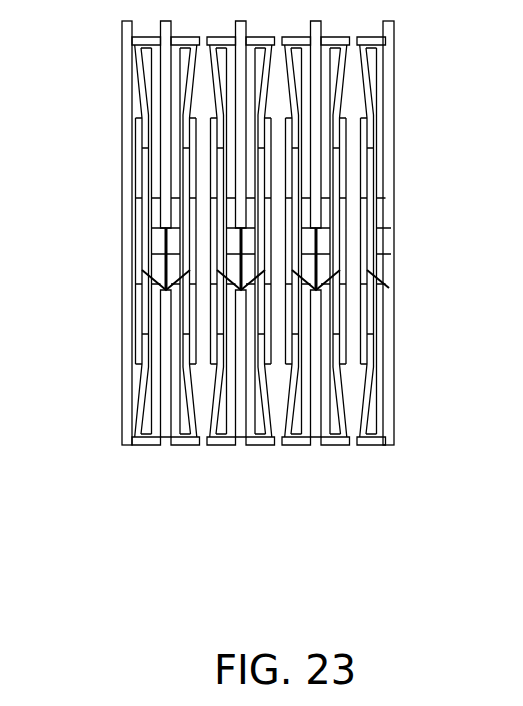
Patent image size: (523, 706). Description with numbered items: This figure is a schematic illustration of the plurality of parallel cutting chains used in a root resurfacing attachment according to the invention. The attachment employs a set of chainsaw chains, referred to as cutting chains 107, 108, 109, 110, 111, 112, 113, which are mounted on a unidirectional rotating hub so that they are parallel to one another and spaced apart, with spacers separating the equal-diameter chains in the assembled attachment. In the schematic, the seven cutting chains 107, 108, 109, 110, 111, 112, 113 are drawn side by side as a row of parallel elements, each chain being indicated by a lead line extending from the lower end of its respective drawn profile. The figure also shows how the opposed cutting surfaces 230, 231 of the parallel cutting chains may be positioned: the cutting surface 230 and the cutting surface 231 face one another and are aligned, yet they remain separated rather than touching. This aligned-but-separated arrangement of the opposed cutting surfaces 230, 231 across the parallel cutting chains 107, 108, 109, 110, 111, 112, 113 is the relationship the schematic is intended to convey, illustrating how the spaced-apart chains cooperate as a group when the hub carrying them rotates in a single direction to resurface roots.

The cutting chain 107 is at (145, 448).
The cutting chain 108 is at (183, 448).
The cutting chain 109 is at (222, 448).
The cutting chain 110 is at (260, 448).
The cutting chain 111 is at (295, 448).
The cutting chain 112 is at (333, 448).
The cutting chain 113 is at (372, 448).
The cutting surface 230 is at (178, 245).
The cutting surface 231 is at (153, 259).